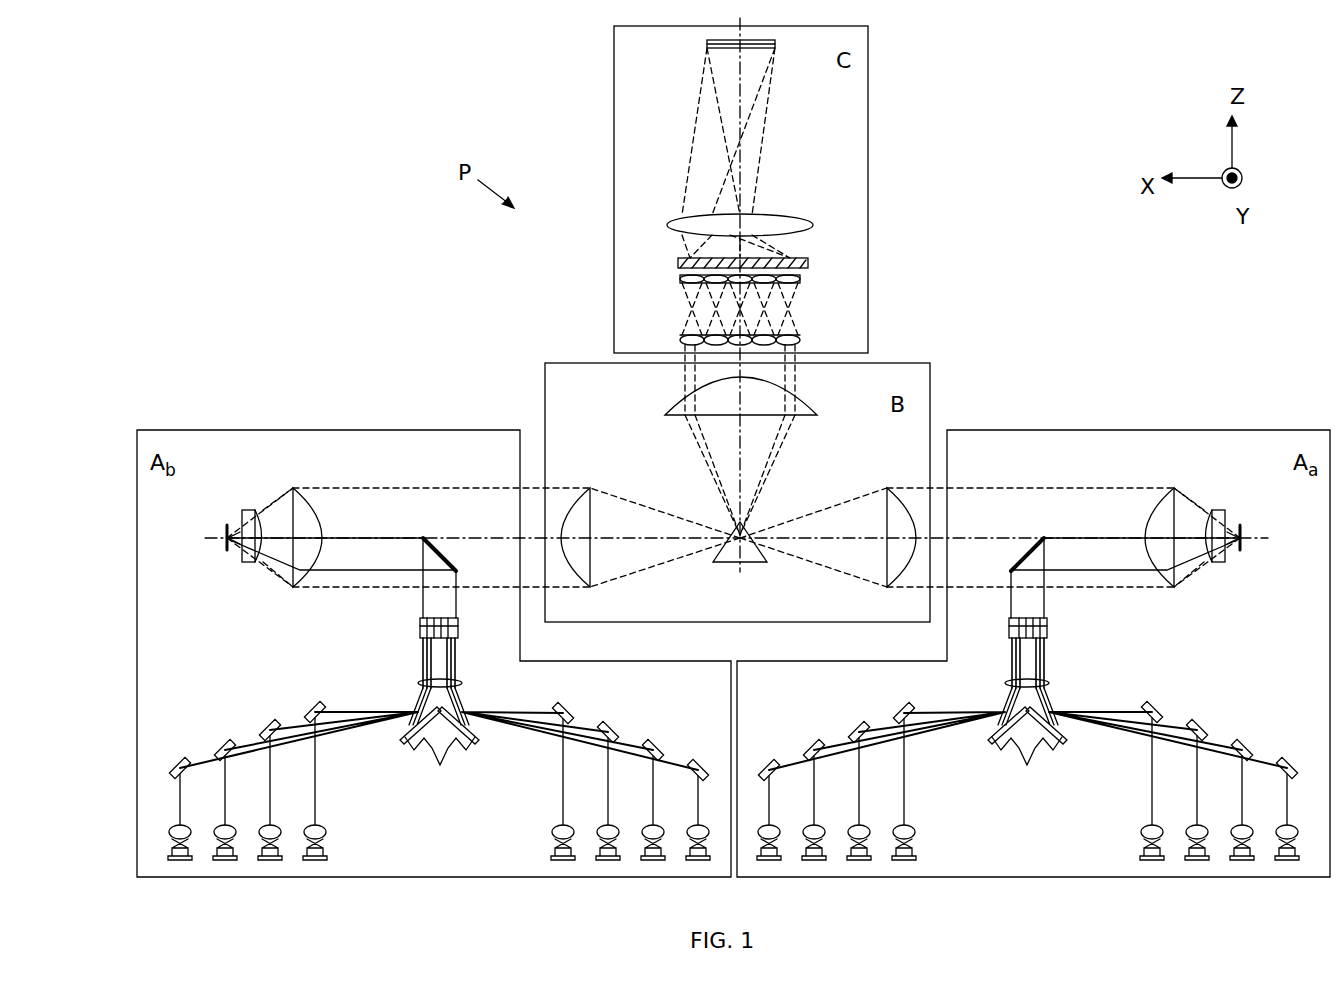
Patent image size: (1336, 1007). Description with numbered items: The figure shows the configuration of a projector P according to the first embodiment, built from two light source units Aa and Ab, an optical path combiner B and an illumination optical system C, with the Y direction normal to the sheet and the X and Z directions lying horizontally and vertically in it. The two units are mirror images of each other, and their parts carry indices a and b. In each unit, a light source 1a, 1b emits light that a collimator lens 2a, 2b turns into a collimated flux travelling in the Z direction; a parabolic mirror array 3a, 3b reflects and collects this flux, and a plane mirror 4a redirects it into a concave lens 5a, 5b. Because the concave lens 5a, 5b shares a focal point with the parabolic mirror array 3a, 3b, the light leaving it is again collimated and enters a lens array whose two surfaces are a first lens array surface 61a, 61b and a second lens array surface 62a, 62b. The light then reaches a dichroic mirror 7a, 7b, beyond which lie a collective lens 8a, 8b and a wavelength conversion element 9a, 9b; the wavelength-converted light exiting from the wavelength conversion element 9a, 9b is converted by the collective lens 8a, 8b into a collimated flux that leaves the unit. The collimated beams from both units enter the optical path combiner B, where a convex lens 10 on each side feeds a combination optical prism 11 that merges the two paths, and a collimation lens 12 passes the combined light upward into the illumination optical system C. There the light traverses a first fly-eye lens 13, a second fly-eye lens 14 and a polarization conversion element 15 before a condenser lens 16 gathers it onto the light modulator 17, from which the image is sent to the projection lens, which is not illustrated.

The light source 1a is at (1028, 789).
The light source 1b is at (574, 856).
The collimator lens 2a is at (1028, 813).
The collimator lens 2b is at (574, 830).
The parabolic mirror array 3a is at (1026, 733).
The parabolic mirror array 3b is at (718, 758).
The plane mirror 4a is at (1027, 764).
The concave lens 5a is at (1044, 688).
The concave lens 5b is at (418, 683).
The first lens array surface 61a is at (996, 663).
The first lens array surface 61b is at (455, 650).
The second lens array surface 62a is at (997, 624).
The second lens array surface 62b is at (458, 622).
The dichroic mirror 7a is at (1020, 539).
The dichroic mirror 7b is at (440, 554).
The collective lens 8a is at (1185, 513).
The collective lens 8b is at (326, 478).
The wavelength conversion element 9a is at (1253, 558).
The wavelength conversion element 9b is at (227, 548).
The convex lens 10 is at (912, 585).
The combination optical prism 11 is at (740, 563).
The collimation lens 12 is at (668, 412).
The first fly-eye lens 13 is at (680, 340).
The second fly-eye lens 14 is at (680, 279).
The polarization conversion element 15 is at (808, 262).
The condenser lens 16 is at (680, 226).
The light modulator 17 is at (707, 44).